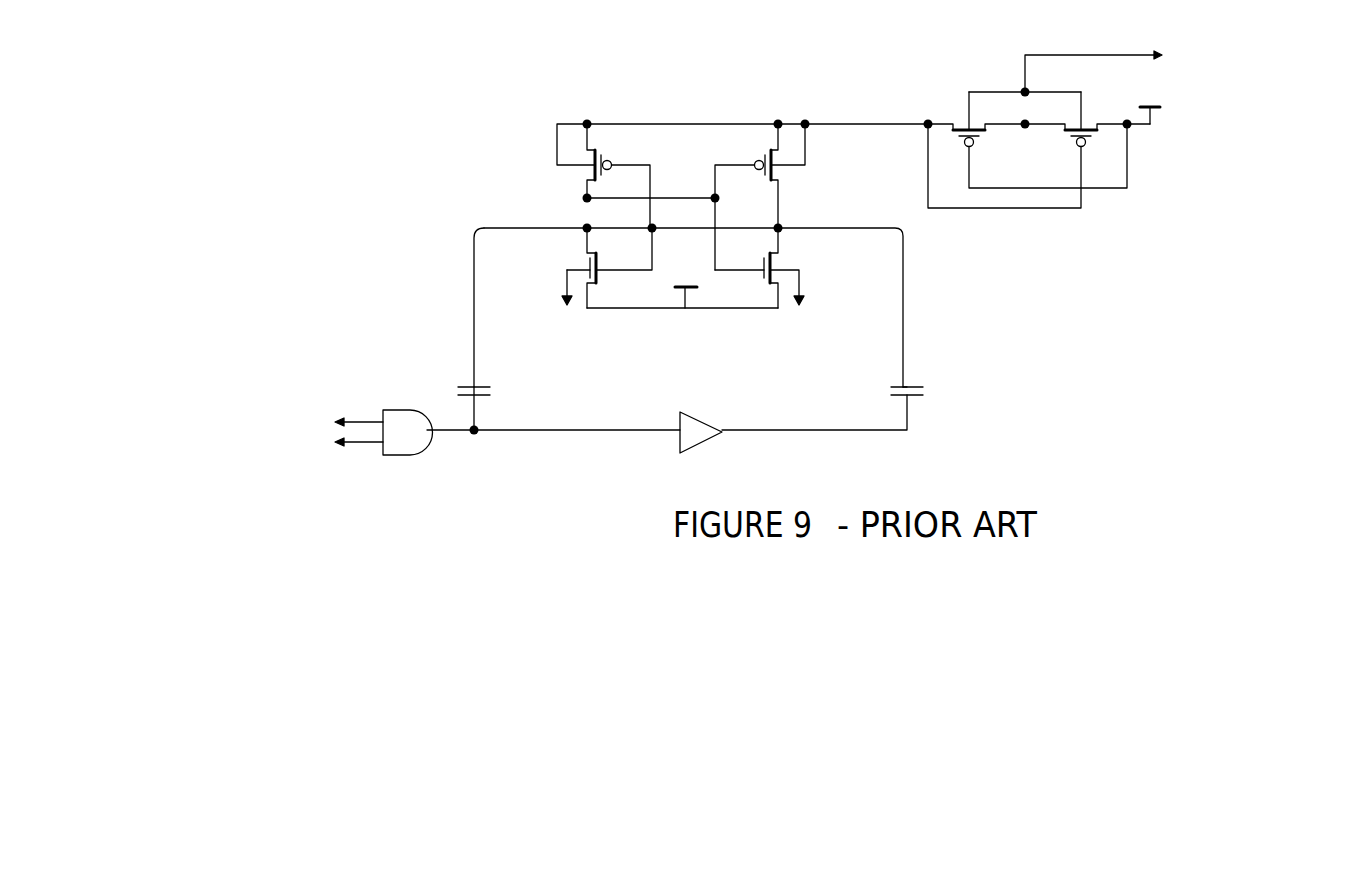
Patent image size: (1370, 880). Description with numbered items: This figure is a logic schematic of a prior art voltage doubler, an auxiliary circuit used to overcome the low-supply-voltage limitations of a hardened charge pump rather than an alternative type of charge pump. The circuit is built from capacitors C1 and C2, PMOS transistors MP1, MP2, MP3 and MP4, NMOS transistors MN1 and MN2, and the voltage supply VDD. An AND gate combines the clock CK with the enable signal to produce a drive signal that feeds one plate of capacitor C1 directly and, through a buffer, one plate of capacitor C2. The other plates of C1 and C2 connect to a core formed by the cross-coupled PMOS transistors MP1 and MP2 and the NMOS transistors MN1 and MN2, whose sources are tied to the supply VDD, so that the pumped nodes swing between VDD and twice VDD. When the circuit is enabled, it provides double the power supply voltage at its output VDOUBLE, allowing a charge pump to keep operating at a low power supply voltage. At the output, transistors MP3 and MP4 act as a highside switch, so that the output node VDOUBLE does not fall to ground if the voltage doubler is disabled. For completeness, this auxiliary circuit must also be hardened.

The PMOS transistor MP1 is at (561, 176).
The PMOS transistor MP2 is at (796, 197).
The NMOS transistor MN1 is at (567, 268).
The NMOS transistor MN2 is at (793, 268).
The PMOS transistor MP3 is at (1003, 134).
The PMOS transistor MP4 is at (1039, 160).
The capacitor C1 is at (493, 404).
The capacitor C2 is at (926, 397).
The voltage supply VDD is at (1155, 125).
The doubled output voltage VDOUBLE is at (1320, 72).
The clock input CK is at (322, 409).